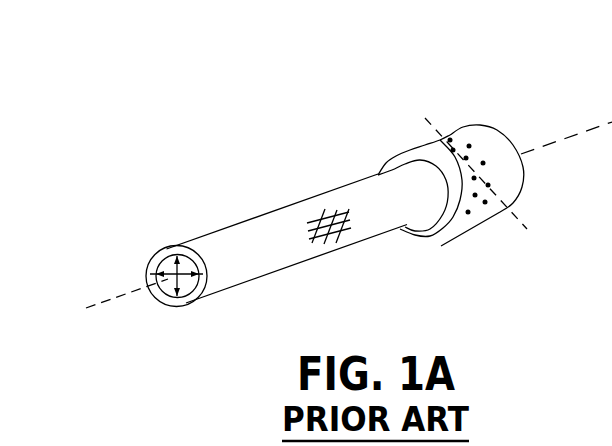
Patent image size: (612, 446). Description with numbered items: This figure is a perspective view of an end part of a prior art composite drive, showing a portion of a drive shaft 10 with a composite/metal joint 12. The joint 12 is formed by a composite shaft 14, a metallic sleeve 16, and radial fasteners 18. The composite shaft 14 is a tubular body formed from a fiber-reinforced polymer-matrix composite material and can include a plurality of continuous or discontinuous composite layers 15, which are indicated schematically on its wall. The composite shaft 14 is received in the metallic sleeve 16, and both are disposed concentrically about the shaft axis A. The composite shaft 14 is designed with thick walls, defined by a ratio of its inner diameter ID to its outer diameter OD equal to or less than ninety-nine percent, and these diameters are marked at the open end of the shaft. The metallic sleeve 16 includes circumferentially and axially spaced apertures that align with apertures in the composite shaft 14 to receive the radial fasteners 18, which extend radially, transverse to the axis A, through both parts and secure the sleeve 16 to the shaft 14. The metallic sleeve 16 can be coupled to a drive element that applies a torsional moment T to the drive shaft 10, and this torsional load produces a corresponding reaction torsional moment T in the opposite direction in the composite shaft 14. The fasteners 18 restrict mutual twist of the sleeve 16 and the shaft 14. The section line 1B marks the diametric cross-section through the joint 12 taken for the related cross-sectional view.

The drive shaft 10 is at (247, 135).
The composite/metal joint 12 is at (448, 90).
The composite shaft 14 is at (277, 235).
The composite layers 15 is at (334, 244).
The metallic sleeve 16 is at (481, 137).
The radial fasteners 18 is at (442, 246).
The inner diameter ID is at (156, 268).
The outer diameter OD is at (186, 302).
The torsional moment T is at (140, 309).
The shaft axis A is at (110, 302).
The section line 1B- 1B is at (414, 119).